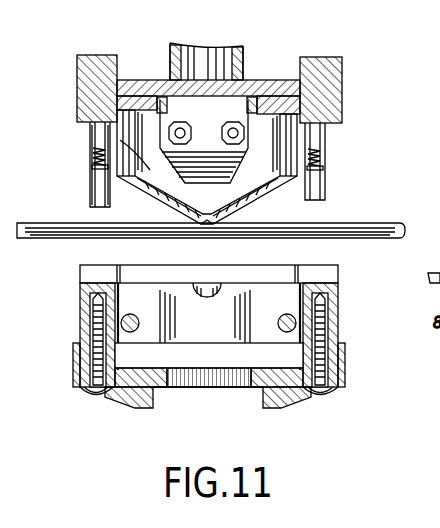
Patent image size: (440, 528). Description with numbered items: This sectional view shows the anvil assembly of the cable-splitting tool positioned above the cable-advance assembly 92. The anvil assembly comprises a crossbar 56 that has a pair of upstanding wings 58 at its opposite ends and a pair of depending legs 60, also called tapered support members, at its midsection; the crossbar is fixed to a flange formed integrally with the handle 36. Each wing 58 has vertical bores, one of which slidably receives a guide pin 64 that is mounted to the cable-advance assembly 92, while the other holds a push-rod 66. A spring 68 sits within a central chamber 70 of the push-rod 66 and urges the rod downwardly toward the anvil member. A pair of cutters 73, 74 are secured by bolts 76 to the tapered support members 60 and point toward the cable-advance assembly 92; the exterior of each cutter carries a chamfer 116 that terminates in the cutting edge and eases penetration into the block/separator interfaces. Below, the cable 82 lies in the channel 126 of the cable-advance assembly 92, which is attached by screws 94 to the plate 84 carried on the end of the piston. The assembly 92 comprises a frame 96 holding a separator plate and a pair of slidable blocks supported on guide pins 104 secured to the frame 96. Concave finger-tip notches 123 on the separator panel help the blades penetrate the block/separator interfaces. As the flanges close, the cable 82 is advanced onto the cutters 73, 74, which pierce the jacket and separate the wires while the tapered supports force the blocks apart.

The handle 36 is at (243, 57).
The crossbar 56 is at (147, 118).
The upstanding wings 58 is at (344, 68).
The depending legs 60 is at (165, 168).
The guide pin 64 is at (90, 138).
The push-rod 66 is at (90, 178).
The spring 68 is at (318, 153).
The central chamber 70 is at (318, 168).
The cutter 73 is at (150, 190).
The cutter 74 is at (278, 190).
The bolts 76 is at (233, 122).
The cable 82 is at (386, 223).
The plate 84 is at (342, 372).
The cable-advance assembly 92 is at (198, 338).
The screws 94 is at (333, 395).
The frame 96 is at (340, 283).
The guide pins 104 is at (302, 320).
The chamfer 116 is at (203, 222).
The finger-tip notches 123 is at (203, 298).
The channel 126 is at (103, 275).